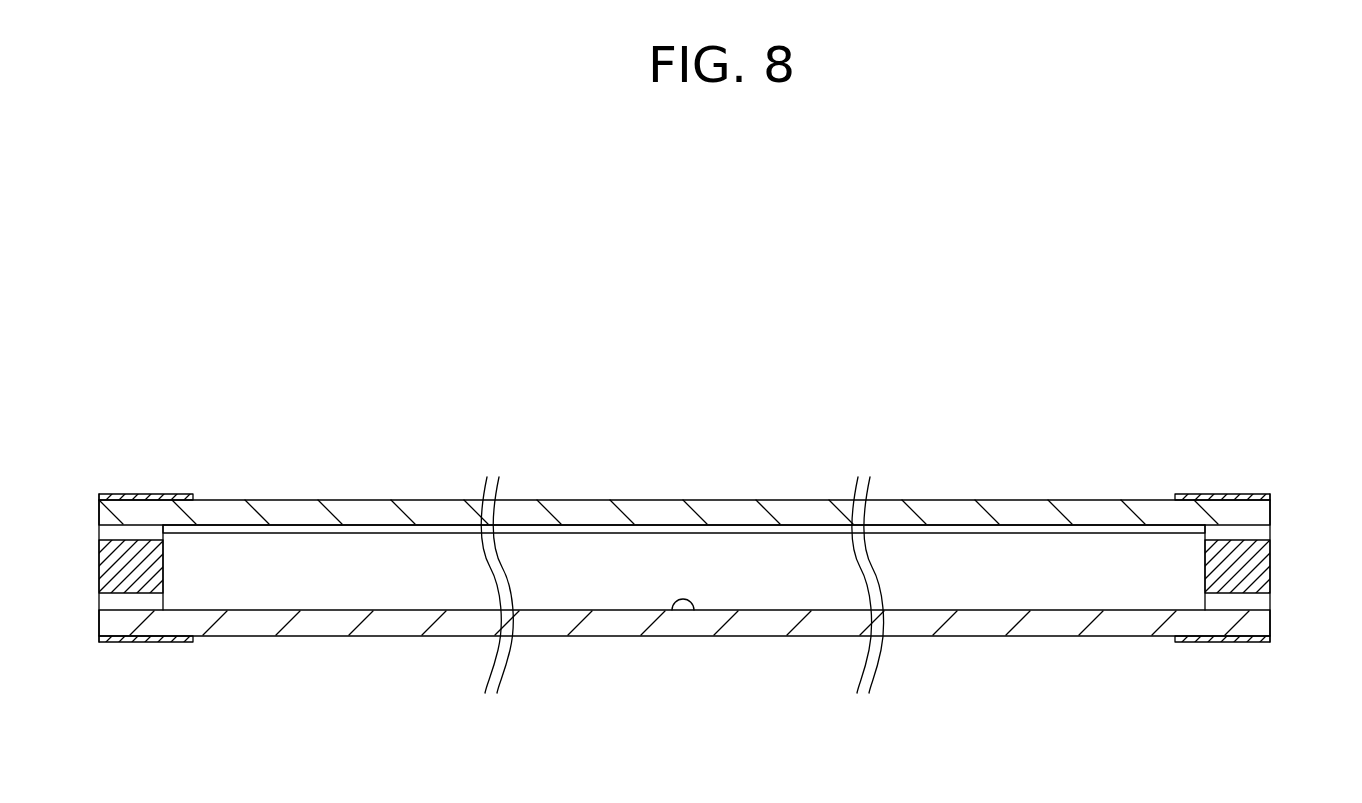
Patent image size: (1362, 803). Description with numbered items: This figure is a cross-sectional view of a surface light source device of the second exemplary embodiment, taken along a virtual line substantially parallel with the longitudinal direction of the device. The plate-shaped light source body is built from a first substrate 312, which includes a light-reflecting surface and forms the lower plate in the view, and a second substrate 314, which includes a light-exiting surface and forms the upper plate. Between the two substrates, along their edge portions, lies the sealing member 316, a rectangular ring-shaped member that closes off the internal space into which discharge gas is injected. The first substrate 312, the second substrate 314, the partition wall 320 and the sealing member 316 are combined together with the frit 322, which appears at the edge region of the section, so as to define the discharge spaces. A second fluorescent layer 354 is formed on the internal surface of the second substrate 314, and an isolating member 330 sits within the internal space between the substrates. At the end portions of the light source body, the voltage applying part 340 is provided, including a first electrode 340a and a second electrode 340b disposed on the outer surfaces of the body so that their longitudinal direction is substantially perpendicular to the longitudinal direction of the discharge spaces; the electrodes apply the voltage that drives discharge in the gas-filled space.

The first substrate 312 is at (592, 613).
The second substrate 314 is at (425, 503).
The sealing member 316 is at (126, 545).
The partition wall 320 is at (930, 593).
The frit 322 is at (1263, 534).
The isolating member 330 is at (677, 610).
The voltage applying part 340 is at (1268, 482).
The first electrode 340a is at (185, 497).
The second electrode 340b is at (1182, 495).
The second fluorescent layer 354 is at (357, 533).